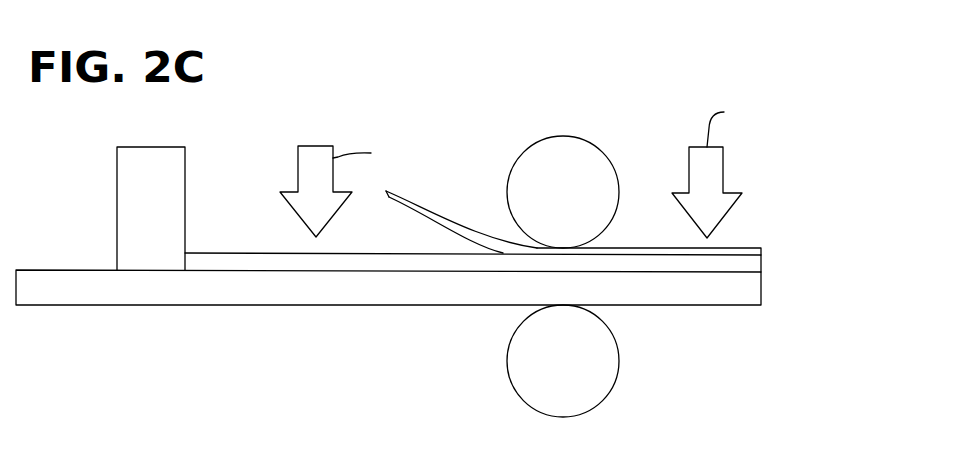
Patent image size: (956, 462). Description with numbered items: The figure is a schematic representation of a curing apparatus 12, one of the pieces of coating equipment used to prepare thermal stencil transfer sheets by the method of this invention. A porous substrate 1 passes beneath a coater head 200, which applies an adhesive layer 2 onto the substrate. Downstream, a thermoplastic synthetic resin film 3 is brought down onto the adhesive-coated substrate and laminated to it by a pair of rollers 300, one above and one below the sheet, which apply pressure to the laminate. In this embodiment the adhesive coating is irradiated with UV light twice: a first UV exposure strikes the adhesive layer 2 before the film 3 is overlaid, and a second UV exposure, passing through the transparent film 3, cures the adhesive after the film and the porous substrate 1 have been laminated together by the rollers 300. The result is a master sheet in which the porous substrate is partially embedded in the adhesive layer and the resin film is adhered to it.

The porous substrate 1 is at (727, 295).
The adhesive layer 2 is at (748, 263).
The thermoplastic synthetic resin film 3 is at (758, 248).
The curing apparatus 12 is at (444, 78).
The coater head 200 is at (125, 199).
The rollers 300 is at (567, 153).